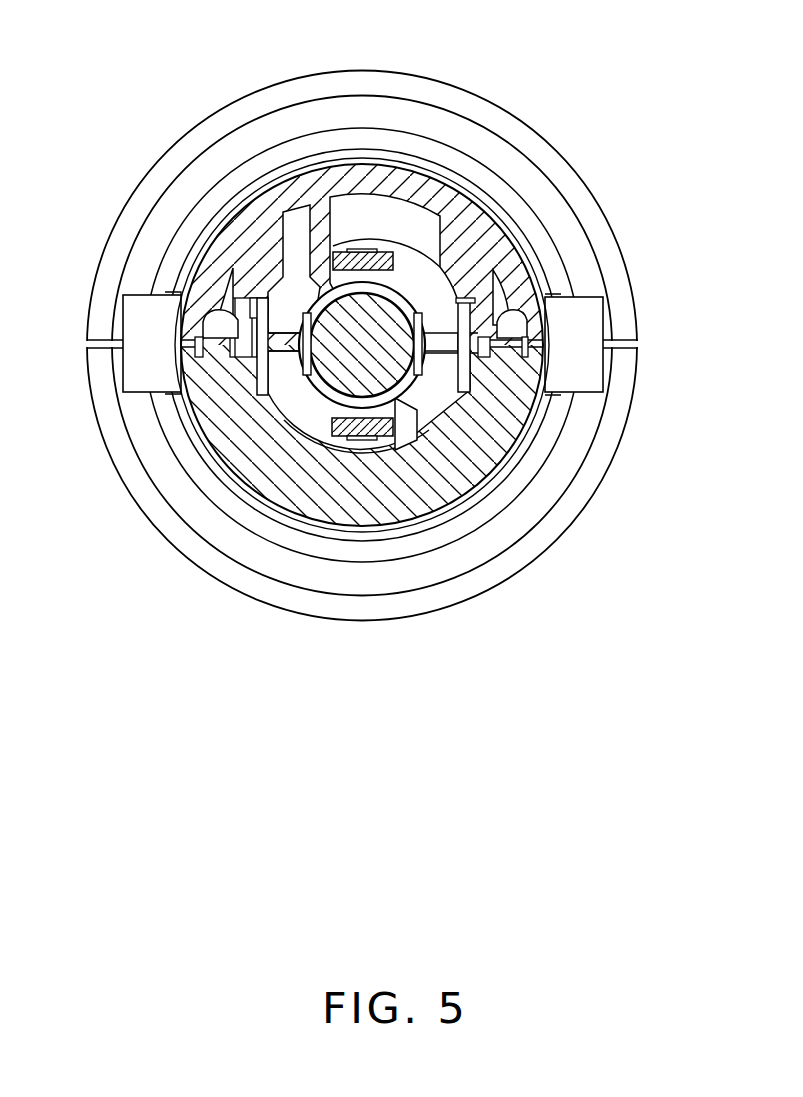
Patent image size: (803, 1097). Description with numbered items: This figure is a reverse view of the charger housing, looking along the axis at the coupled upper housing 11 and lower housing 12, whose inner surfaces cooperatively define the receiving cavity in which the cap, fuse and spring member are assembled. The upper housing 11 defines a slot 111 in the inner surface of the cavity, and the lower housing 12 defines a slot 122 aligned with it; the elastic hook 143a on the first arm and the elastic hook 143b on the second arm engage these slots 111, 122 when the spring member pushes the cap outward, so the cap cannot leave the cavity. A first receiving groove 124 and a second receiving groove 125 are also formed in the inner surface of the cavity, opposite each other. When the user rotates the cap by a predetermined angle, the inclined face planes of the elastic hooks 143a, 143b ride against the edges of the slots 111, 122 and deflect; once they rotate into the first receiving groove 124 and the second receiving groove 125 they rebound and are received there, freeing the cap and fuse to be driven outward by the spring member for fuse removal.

The upper housing 11 is at (247, 237).
The lower housing 12 is at (233, 420).
The slot 111 is at (364, 250).
The slot 122 is at (405, 413).
The first receiving groove 124 is at (252, 323).
The second receiving groove 125 is at (473, 302).
The elastic hook 143a is at (366, 252).
The elastic hook 143b is at (334, 418).